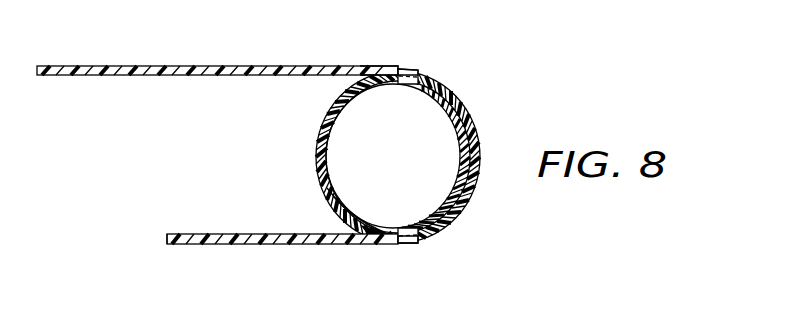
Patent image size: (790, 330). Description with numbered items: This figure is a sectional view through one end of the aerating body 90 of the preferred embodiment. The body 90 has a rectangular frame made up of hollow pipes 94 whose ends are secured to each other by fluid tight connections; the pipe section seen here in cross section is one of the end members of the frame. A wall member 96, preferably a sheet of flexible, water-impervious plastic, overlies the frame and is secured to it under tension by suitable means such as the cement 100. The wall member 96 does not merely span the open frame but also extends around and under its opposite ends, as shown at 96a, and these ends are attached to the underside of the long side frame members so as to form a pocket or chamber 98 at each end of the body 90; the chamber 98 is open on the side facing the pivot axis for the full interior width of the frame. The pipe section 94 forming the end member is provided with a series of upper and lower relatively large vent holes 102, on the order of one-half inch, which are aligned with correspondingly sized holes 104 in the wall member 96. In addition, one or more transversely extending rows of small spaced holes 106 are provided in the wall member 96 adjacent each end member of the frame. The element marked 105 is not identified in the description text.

The aerating body 90 is at (280, 159).
The hollow pipes 94 is at (318, 143).
The wall member 96 is at (243, 66).
The wall member end portion 96a is at (292, 245).
The pocket or chamber 98 is at (185, 192).
The cement 100 is at (388, 234).
The vent holes 102 is at (408, 84).
The holes in wall member 104 is at (405, 69).
The lower connector 105 is at (411, 245).
The small spaced holes 106 is at (360, 66).